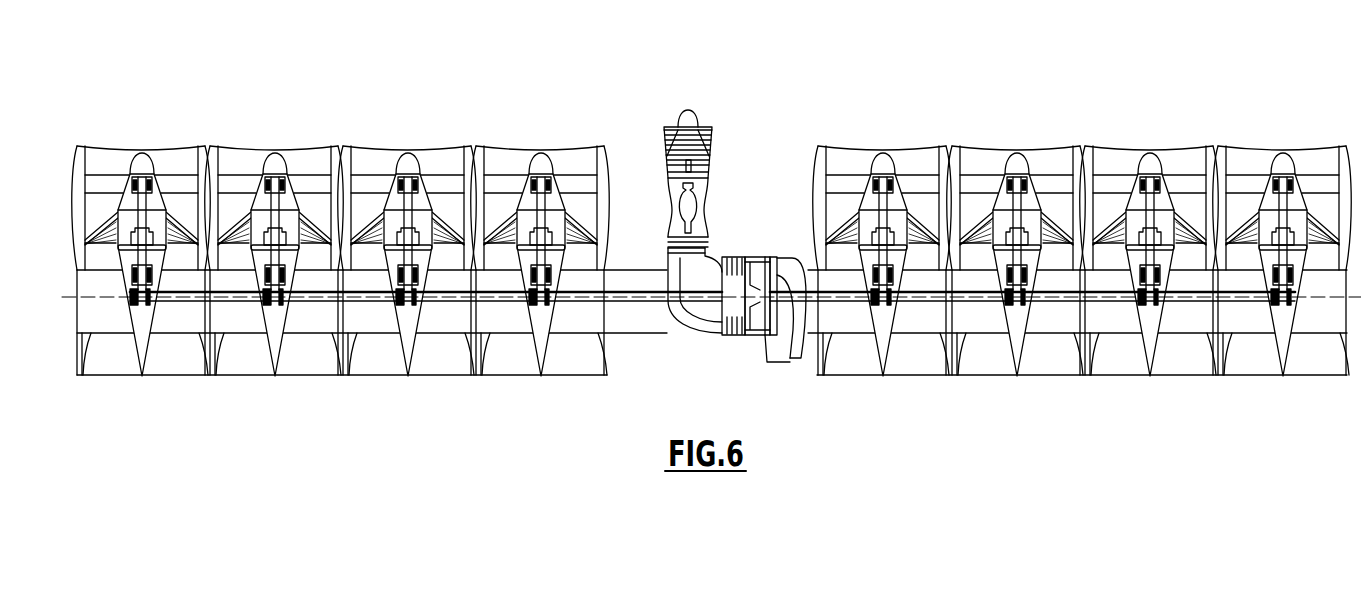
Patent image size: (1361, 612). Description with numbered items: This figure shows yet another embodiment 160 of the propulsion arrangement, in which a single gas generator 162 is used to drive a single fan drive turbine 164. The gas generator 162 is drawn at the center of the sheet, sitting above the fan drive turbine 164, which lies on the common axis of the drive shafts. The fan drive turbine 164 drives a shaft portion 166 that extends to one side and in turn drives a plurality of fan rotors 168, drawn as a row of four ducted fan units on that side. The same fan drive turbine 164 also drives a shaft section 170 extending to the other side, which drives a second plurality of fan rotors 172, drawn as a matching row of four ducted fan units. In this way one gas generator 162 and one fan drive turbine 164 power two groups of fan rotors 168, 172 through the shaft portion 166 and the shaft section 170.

The embodiment 160 is at (748, 207).
The gas generator 162 is at (712, 157).
The fan drive turbine 164 is at (737, 310).
The shaft portion 166 is at (583, 300).
The plurality of fan rotors 168 is at (511, 140).
The shaft section 170 is at (984, 300).
The second plurality of fan rotors 172 is at (976, 140).